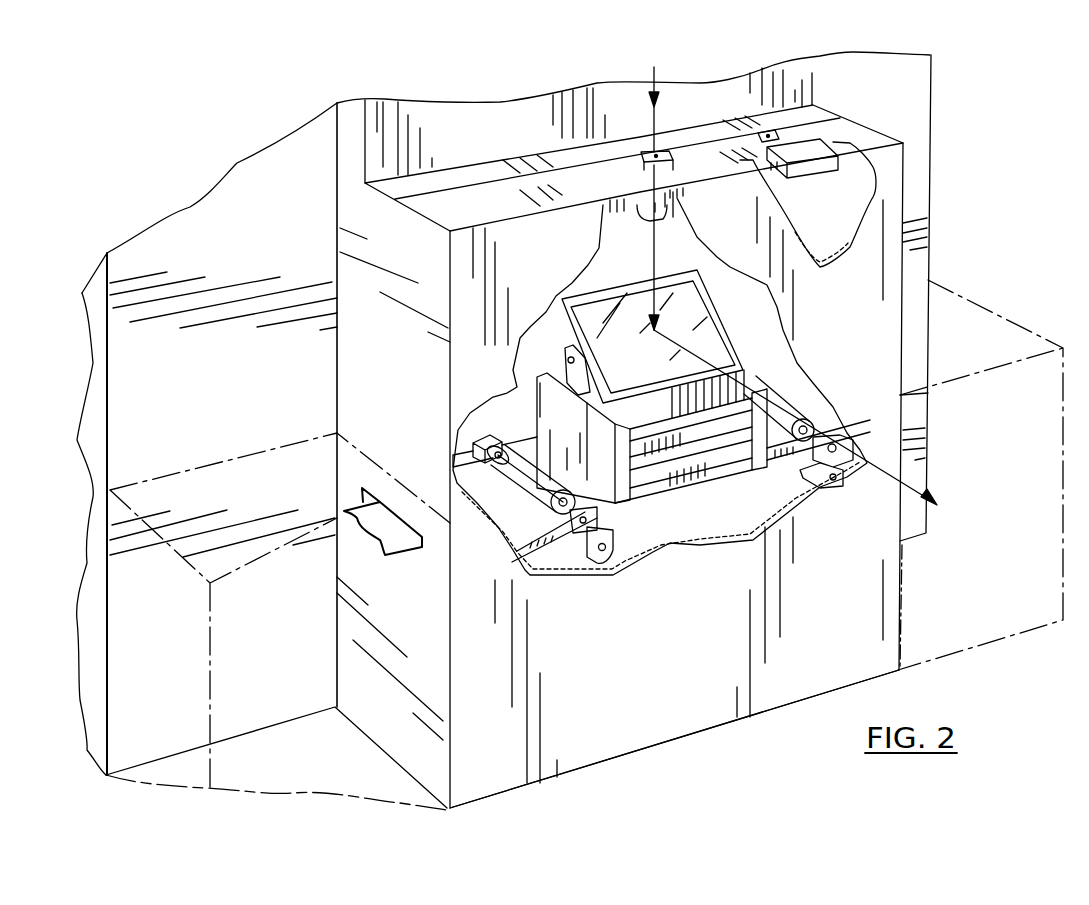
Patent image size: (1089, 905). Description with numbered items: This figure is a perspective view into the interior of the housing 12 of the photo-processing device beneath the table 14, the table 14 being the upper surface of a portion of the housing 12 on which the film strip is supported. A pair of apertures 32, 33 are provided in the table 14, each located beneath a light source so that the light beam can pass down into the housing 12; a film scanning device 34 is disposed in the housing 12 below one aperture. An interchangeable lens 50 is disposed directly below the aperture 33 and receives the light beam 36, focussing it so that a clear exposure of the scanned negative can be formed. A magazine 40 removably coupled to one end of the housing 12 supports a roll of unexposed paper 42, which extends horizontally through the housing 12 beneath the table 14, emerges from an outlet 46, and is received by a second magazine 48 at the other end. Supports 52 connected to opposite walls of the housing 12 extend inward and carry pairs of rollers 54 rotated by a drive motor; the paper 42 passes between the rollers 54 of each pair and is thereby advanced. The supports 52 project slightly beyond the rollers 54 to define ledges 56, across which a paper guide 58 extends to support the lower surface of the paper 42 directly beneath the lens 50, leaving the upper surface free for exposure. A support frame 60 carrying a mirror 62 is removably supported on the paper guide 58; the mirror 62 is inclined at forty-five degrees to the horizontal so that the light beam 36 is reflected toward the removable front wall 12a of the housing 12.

The housing 12 is at (935, 118).
The removable front wall 12a is at (608, 747).
The table 14 is at (462, 186).
The aperture 32 is at (770, 135).
The aperture 33 is at (680, 158).
The film scanning device 34 is at (810, 170).
The light beam 36 is at (655, 127).
The magazine 40 is at (992, 322).
The unexposed paper 42 is at (490, 510).
The outlet 46 is at (425, 545).
The second magazine 48 is at (277, 763).
The interchangeable lens 50 is at (668, 219).
The supports 52 is at (603, 540).
The rollers 54 is at (523, 442).
The ledges 56 is at (603, 515).
The paper guide 58 is at (713, 477).
The support frame 60 is at (563, 362).
The mirror 62 is at (693, 313).